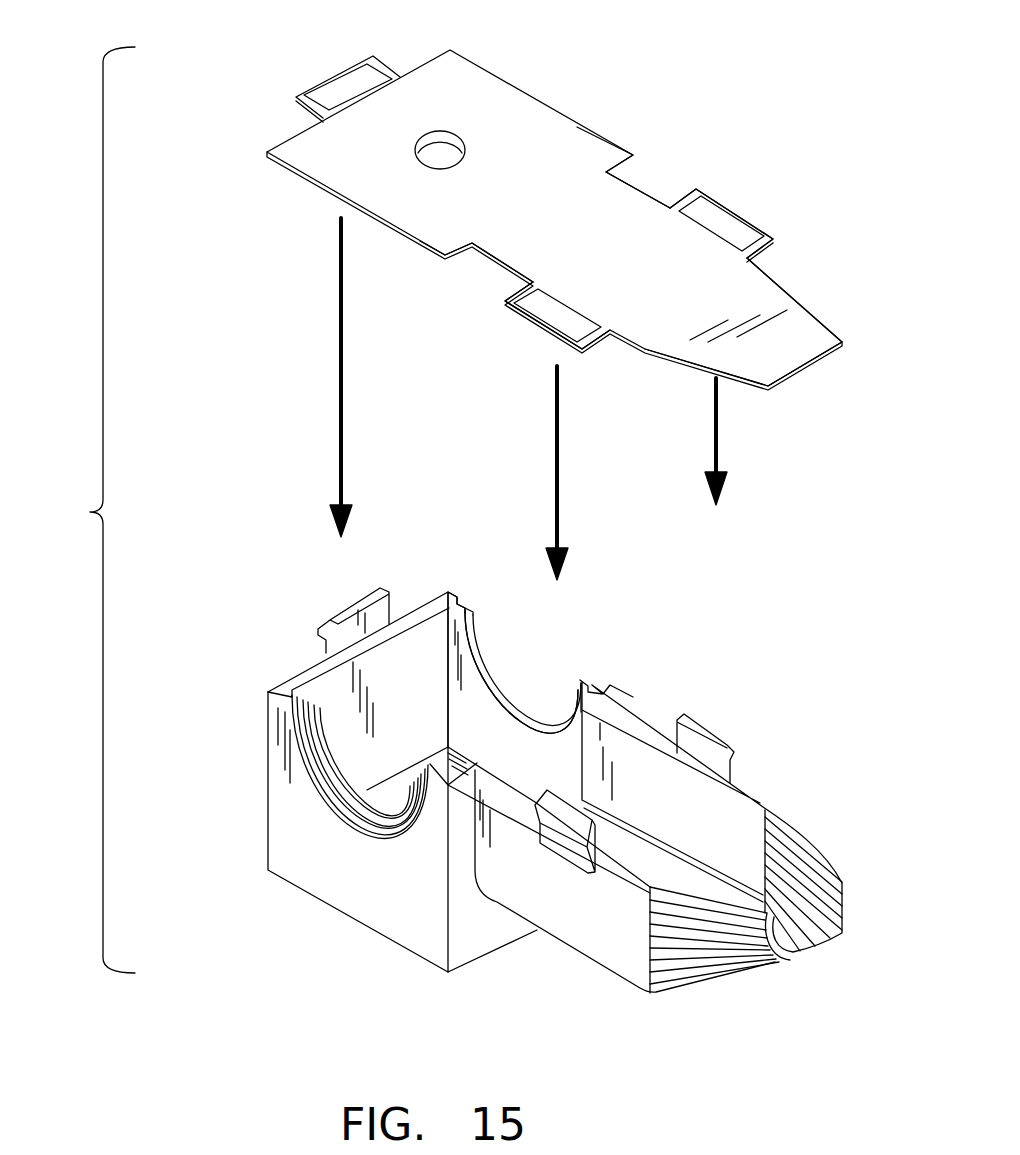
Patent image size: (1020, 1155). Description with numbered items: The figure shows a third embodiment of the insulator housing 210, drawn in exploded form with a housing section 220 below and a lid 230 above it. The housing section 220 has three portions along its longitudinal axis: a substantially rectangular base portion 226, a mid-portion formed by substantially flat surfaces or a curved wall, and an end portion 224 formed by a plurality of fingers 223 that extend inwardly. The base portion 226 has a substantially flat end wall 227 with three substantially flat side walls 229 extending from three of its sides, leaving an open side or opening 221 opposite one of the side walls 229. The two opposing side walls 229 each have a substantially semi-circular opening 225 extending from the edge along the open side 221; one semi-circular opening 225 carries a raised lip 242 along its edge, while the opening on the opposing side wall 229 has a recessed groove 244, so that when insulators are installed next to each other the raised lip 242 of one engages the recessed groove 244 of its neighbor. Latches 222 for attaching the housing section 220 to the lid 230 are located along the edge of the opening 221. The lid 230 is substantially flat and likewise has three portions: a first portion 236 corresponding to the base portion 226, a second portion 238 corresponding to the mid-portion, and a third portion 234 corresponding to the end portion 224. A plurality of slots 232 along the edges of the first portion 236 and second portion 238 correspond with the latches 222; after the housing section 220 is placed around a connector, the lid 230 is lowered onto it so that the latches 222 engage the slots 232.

The insulator housing 210 is at (81, 510).
The housing section 220 is at (688, 652).
The opening 221 is at (688, 805).
The latches 222 is at (333, 603).
The fingers 223 is at (717, 968).
The end portion 224 is at (827, 945).
The semi-circular opening 225 is at (520, 684).
The base portion 226 is at (302, 895).
The end wall 227 is at (403, 657).
The side walls 229 is at (397, 900).
The lid 230 is at (528, 57).
The slots 232 is at (318, 82).
The third portion 234 is at (822, 313).
The first portion 236 is at (577, 127).
The second portion 238 is at (485, 262).
The raised lip 242 is at (298, 723).
The recessed groove 244 is at (483, 643).